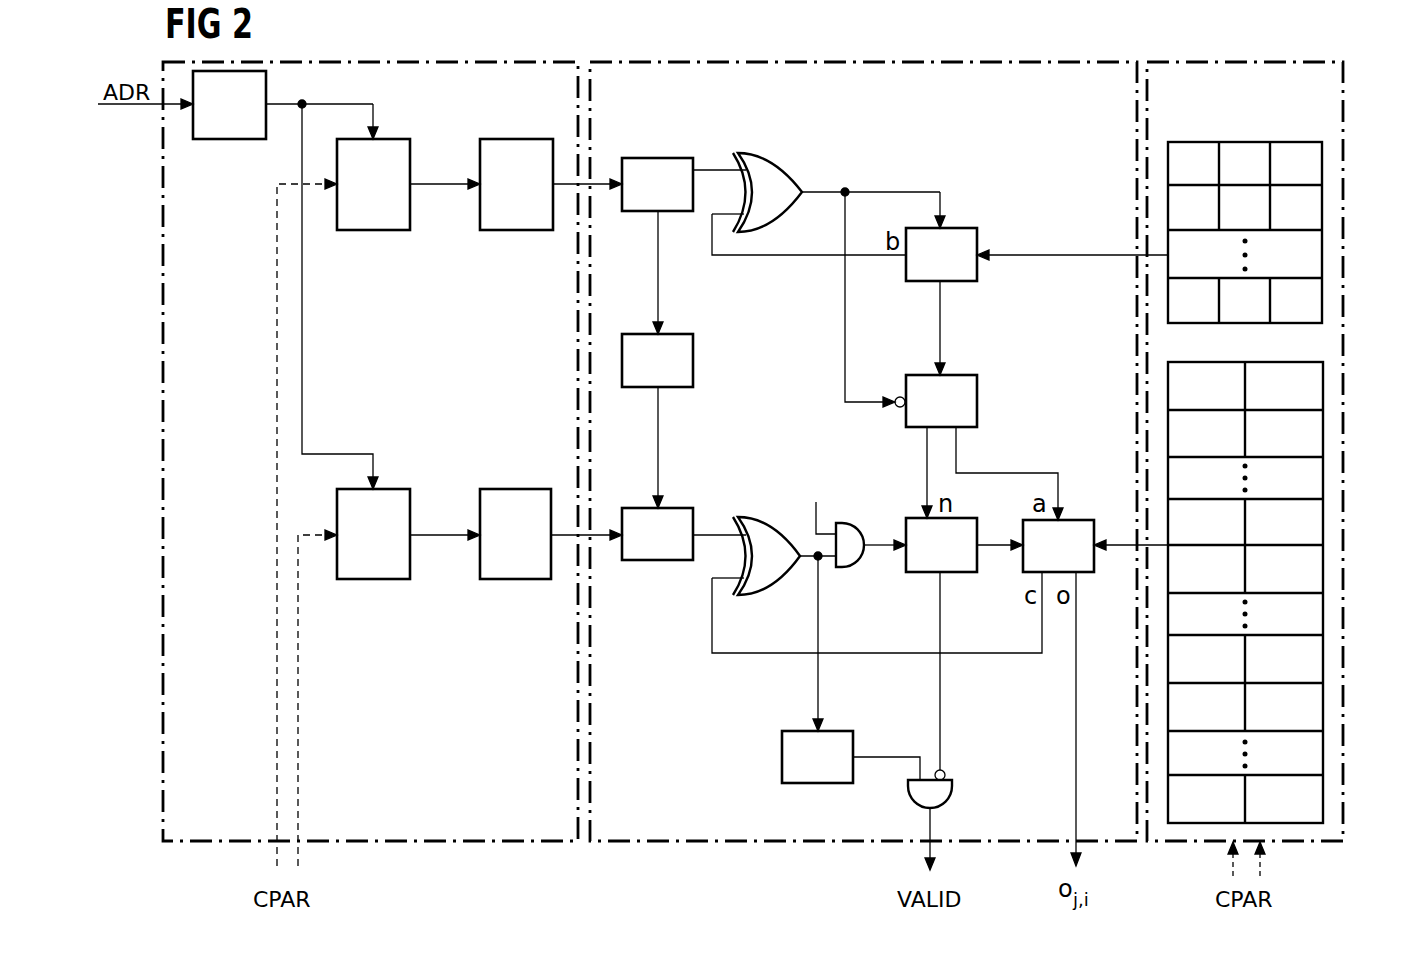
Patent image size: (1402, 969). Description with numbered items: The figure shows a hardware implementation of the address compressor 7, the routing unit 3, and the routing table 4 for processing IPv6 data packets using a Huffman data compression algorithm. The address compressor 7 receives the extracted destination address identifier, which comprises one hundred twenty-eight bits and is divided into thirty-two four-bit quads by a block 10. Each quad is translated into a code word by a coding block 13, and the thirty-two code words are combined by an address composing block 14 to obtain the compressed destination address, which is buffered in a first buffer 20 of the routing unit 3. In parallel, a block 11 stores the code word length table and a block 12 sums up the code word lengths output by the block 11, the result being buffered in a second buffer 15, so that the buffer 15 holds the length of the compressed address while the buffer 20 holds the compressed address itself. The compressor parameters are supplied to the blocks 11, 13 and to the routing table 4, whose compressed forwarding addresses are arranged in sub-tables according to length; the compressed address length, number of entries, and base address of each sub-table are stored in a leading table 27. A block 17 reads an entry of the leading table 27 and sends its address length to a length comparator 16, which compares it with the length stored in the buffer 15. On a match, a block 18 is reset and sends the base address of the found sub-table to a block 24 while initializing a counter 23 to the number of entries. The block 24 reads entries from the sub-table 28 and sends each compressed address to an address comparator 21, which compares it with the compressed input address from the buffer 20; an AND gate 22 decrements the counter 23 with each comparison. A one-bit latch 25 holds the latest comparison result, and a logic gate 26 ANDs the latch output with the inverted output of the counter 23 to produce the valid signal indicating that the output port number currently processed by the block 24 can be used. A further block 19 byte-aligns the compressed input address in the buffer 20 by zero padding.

The routing unit 3 is at (750, 842).
The routing table 4 is at (1175, 842).
The address compressor 7 is at (432, 842).
The block 10 is at (228, 139).
The block 11 is at (373, 230).
The block 12 is at (515, 230).
The coding block 13 is at (370, 579).
The address composing block 14 is at (513, 579).
The second buffer 15 is at (638, 211).
The length comparator 16 is at (772, 153).
The block 17 is at (960, 228).
The block 18 is at (977, 402).
The block 19 is at (693, 361).
The first buffer 20 is at (660, 560).
The address comparator 21 is at (756, 518).
The AND gate 22 is at (846, 523).
The counter 23 is at (960, 572).
The block 24 is at (1076, 520).
The 1 bit-latch 25 is at (782, 757).
The logic gate 26 is at (952, 795).
The leading table 27 is at (1245, 142).
The sub-table 28 is at (1323, 522).